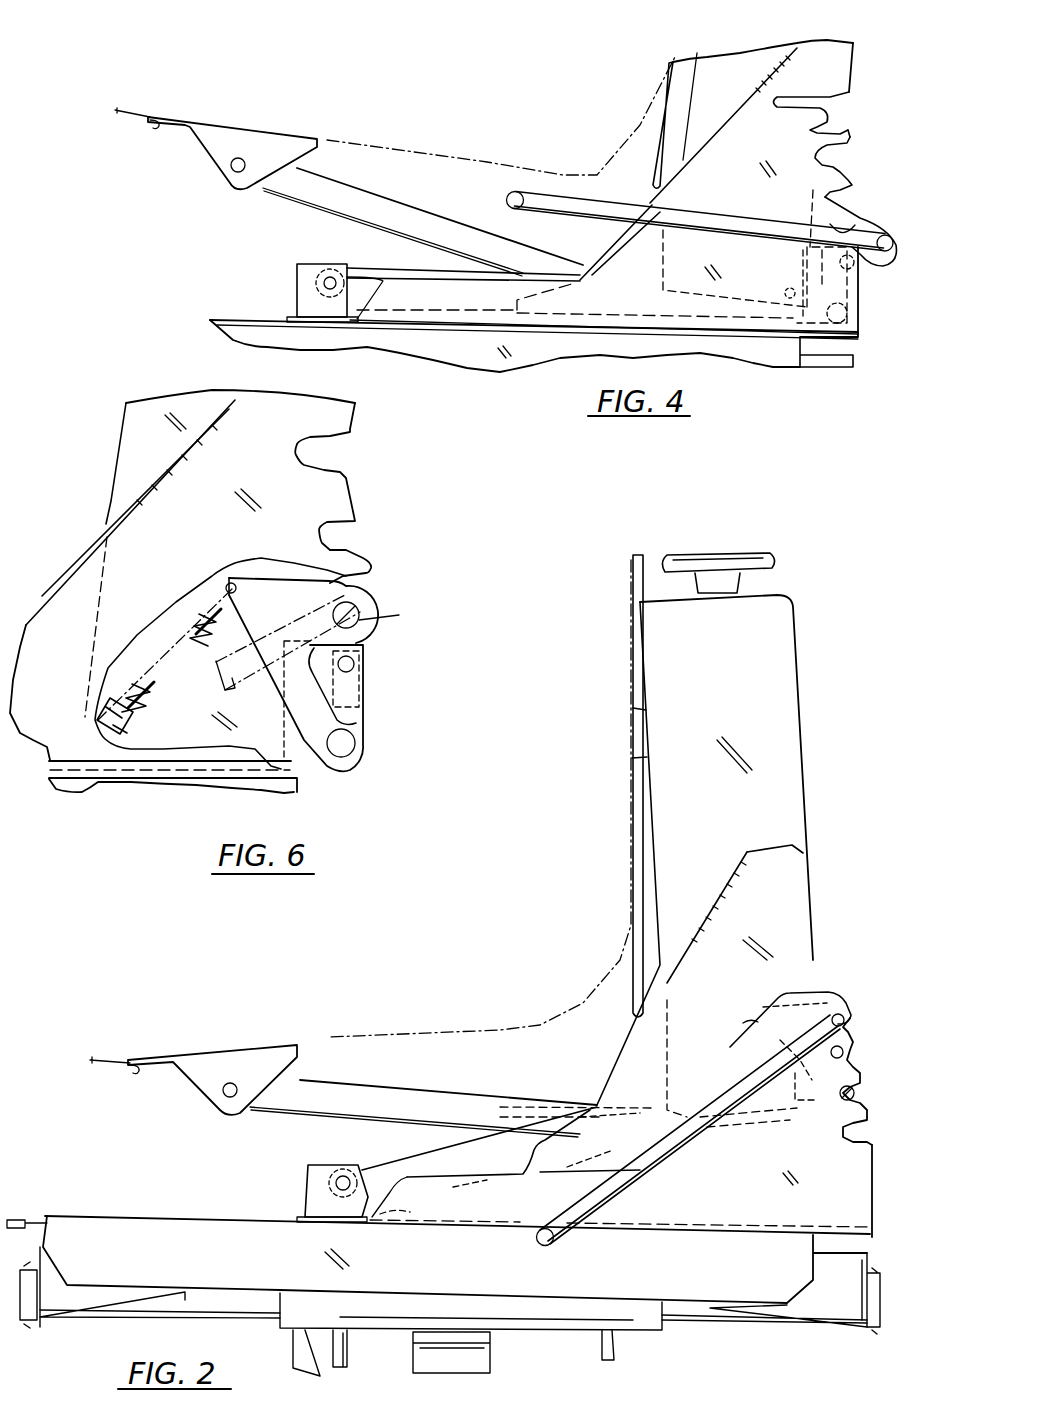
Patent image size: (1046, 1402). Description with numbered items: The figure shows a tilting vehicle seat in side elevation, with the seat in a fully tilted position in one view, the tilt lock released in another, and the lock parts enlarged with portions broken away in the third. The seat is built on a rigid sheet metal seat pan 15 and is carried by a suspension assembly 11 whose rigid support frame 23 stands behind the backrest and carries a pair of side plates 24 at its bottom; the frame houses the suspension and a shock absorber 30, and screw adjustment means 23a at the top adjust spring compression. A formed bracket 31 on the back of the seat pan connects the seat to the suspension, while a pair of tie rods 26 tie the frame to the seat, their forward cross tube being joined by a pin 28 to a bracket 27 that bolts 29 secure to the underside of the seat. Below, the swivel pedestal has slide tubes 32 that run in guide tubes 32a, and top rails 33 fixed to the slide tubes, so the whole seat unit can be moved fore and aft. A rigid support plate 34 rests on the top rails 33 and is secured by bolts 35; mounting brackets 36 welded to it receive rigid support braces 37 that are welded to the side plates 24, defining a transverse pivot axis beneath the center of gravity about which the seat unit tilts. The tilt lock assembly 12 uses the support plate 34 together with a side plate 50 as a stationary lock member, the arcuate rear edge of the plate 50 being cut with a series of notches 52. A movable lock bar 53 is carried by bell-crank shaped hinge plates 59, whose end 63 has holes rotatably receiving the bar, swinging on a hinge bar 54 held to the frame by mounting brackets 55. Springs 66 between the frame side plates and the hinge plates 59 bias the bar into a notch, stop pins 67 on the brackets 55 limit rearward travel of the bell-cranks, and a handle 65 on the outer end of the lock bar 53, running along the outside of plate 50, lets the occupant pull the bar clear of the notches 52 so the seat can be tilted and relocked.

In FIG. 2, the suspension assembly 11 is at (818, 603).
In FIG. 2, the tilt lock assembly 12 is at (873, 975).
In FIG. 4, the seat pan 15 is at (487, 166).
In FIG. 2, the seat pan 15 is at (513, 1032).
In FIG. 4, the support frame 23 is at (855, 45).
In FIG. 6, the support frame 23 is at (123, 437).
In FIG. 2, the support frame 23 is at (788, 692).
In FIG. 2, the screw adjustment means 23a is at (782, 559).
In FIG. 4, the side plate 24 is at (837, 73).
In FIG. 6, the side plate 24 is at (118, 506).
In FIG. 2, the side plate 24 is at (802, 903).
In FIG. 4, the tie rods 26 is at (360, 190).
In FIG. 2, the tie rods 26 is at (410, 1093).
In FIG. 4, the bracket 27 is at (313, 153).
In FIG. 2, the bracket 27 is at (298, 1052).
In FIG. 4, the pin 28 is at (232, 172).
In FIG. 2, the pin 28 is at (222, 1092).
In FIG. 4, the bolts 29 is at (155, 128).
In FIG. 2, the bolts 29 is at (133, 1075).
In FIG. 4, the shock absorber 30 is at (655, 157).
In FIG. 2, the shock absorber 30 is at (633, 993).
In FIG. 2, the formed bracket 31 is at (640, 728).
In FIG. 4, the slide tubes 32 is at (832, 363).
In FIG. 2, the slide tubes 32 is at (733, 1317).
In FIG. 2, the guide tubes 32a is at (643, 1323).
In FIG. 4, the top rails 33 is at (223, 322).
In FIG. 6, the top rails 33 is at (144, 800).
In FIG. 2, the top rails 33 is at (88, 1222).
In FIG. 4, the support plate 34 is at (472, 324).
In FIG. 6, the support plate 34 is at (93, 786).
In FIG. 2, the support plate 34 is at (466, 1224).
In FIG. 2, the bolts 35 is at (827, 1207).
In FIG. 4, the mounting brackets 36 is at (297, 288).
In FIG. 2, the mounting brackets 36 is at (305, 1180).
In FIG. 4, the support braces 37 is at (368, 268).
In FIG. 2, the support braces 37 is at (440, 1150).
In FIG. 4, the side plate 50 is at (770, 157).
In FIG. 6, the side plate 50 is at (57, 610).
In FIG. 2, the side plate 50 is at (793, 1180).
In FIG. 4, the notches 52 is at (840, 133).
In FIG. 6, the notches 52 is at (384, 522).
In FIG. 2, the notches 52 is at (890, 1130).
In FIG. 4, the lock bar 53 is at (887, 228).
In FIG. 6, the lock bar 53 is at (400, 621).
In FIG. 2, the lock bar 53 is at (850, 1013).
In FIG. 4, the hinge bar 54 is at (853, 317).
In FIG. 6, the hinge bar 54 is at (350, 746).
In FIG. 2, the hinge bar 54 is at (857, 1087).
In FIG. 4, the mounting brackets 55 is at (860, 290).
In FIG. 6, the mounting brackets 55 is at (366, 690).
In FIG. 2, the mounting brackets 55 is at (853, 1060).
In FIG. 4, the hinge plates 59 is at (905, 236).
In FIG. 6, the hinge plates 59 is at (382, 605).
In FIG. 2, the hinge plates 59 is at (847, 1003).
In FIG. 6, the end of hinge plate 63 is at (373, 587).
In FIG. 4, the handle 65 is at (585, 213).
In FIG. 2, the handle 65 is at (703, 1120).
In FIG. 6, the springs 66 is at (196, 602).
In FIG. 4, the stop pins 67 is at (850, 265).
In FIG. 6, the stop pins 67 is at (350, 663).
In FIG. 2, the stop pins 67 is at (843, 1052).